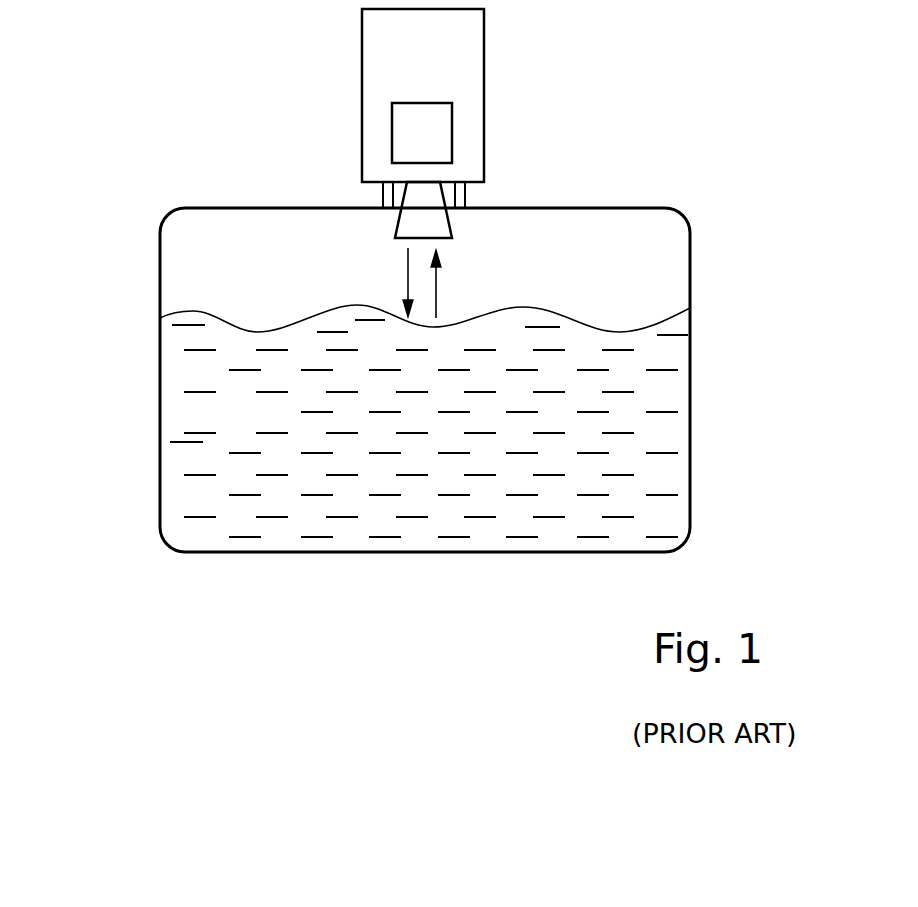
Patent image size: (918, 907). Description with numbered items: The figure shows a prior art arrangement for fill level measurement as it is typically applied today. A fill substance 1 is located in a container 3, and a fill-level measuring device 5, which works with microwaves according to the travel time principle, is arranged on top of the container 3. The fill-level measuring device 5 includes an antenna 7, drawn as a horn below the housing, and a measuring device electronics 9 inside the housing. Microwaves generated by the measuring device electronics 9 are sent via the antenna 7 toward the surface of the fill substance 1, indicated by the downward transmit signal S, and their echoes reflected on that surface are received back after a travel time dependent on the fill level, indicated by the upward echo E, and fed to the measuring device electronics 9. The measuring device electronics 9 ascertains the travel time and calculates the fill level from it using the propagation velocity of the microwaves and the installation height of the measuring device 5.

The fill substance 1 is at (252, 423).
The container 3 is at (160, 271).
The fill-level measuring device 5 is at (366, 130).
The antenna 7 is at (425, 228).
The measuring device electronics 9 is at (432, 143).
The transmitted signal S is at (407, 272).
The echo signal E is at (438, 288).